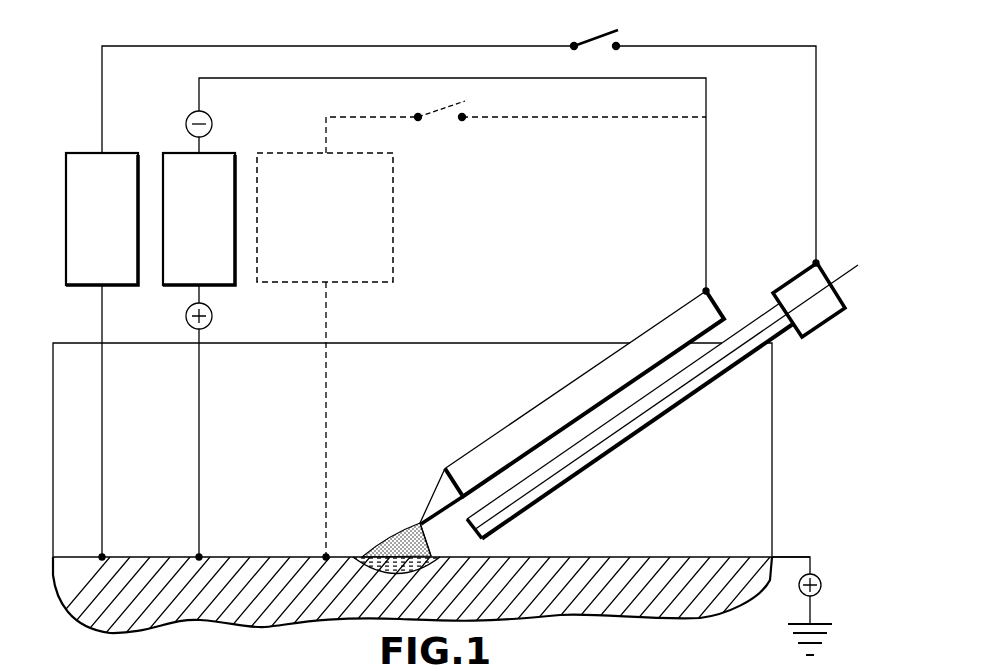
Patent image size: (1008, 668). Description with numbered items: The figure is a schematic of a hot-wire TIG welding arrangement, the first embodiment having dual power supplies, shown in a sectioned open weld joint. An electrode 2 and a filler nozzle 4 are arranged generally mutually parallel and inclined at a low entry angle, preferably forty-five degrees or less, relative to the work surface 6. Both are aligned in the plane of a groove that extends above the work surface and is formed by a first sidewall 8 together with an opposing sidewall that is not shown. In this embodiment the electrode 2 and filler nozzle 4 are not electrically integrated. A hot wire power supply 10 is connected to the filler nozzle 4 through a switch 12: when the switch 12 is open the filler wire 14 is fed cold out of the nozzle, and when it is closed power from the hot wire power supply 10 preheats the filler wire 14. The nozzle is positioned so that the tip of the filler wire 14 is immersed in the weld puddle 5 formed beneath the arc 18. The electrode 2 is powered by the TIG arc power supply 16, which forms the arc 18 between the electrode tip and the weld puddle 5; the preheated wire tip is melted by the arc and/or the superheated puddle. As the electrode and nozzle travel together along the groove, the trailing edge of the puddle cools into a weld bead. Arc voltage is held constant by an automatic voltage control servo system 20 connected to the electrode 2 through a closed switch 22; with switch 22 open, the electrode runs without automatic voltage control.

The electrode 2 is at (512, 424).
The filler nozzle 4 is at (597, 460).
The weld puddle 5 is at (358, 568).
The work surface 6 is at (659, 556).
The first sidewall 8 is at (266, 430).
The hot wire power supply 10 is at (65, 207).
The switch 12 is at (598, 36).
The filler wire 14 is at (462, 539).
The TIG arc power supply 16 is at (173, 150).
The arc 18 is at (397, 542).
The automatic voltage control servo system 20 is at (393, 213).
The switch 22 is at (437, 110).